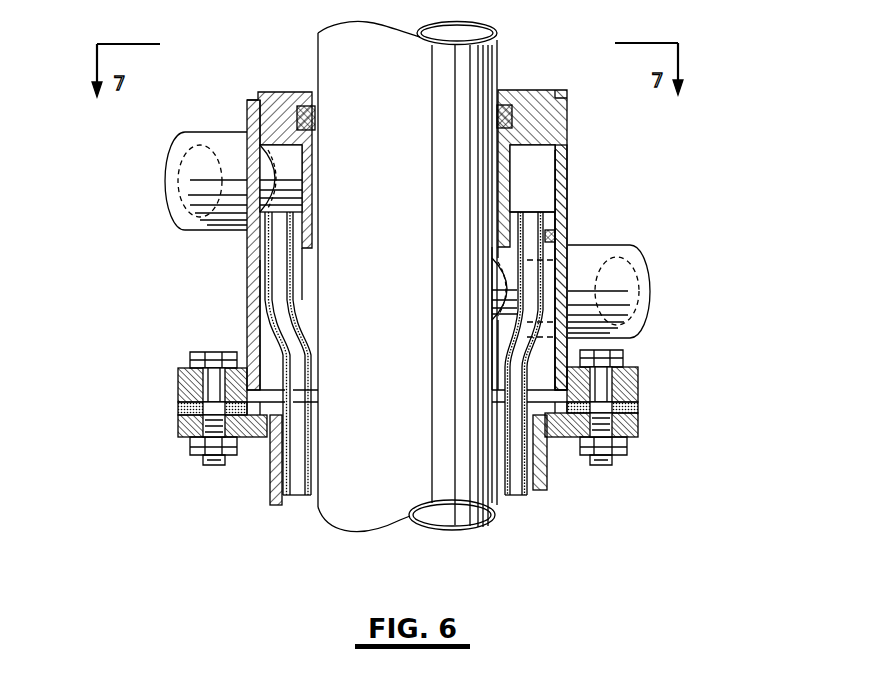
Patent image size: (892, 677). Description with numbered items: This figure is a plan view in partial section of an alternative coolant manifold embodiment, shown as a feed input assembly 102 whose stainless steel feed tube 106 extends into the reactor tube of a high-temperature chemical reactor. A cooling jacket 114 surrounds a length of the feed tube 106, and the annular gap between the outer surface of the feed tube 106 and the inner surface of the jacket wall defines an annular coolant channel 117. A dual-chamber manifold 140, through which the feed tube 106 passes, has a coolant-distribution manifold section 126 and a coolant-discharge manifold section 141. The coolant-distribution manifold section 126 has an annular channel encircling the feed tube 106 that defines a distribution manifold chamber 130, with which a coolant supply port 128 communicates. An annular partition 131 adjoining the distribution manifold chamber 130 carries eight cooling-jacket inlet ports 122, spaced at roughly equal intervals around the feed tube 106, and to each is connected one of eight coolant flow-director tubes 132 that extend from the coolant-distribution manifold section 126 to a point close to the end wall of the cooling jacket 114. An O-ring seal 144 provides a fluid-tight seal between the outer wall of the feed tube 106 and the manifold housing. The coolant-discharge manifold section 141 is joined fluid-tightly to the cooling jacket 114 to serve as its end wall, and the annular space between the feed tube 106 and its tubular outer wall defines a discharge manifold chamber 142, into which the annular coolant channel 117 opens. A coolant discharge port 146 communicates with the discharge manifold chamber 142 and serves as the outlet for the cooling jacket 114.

The feed input assembly 102 is at (666, 128).
The feed tube 106 is at (500, 508).
The cooling jacket 114 is at (547, 478).
The annular coolant channel 117 is at (283, 497).
The cooling-jacket inlet port 122 is at (560, 177).
The coolant-distribution manifold section 126 is at (586, 215).
The coolant supply port 128 is at (248, 138).
The distribution manifold chamber 130 is at (538, 163).
The annular partition 131 is at (545, 205).
The coolant flow-director tube 132 is at (537, 497).
The dual-chamber manifold 140 is at (211, 241).
The coolant-discharge manifold section 141 is at (245, 292).
The discharge manifold chamber 142 is at (272, 383).
The O-ring seal 144 is at (510, 107).
The coolant discharge port 146 is at (598, 243).